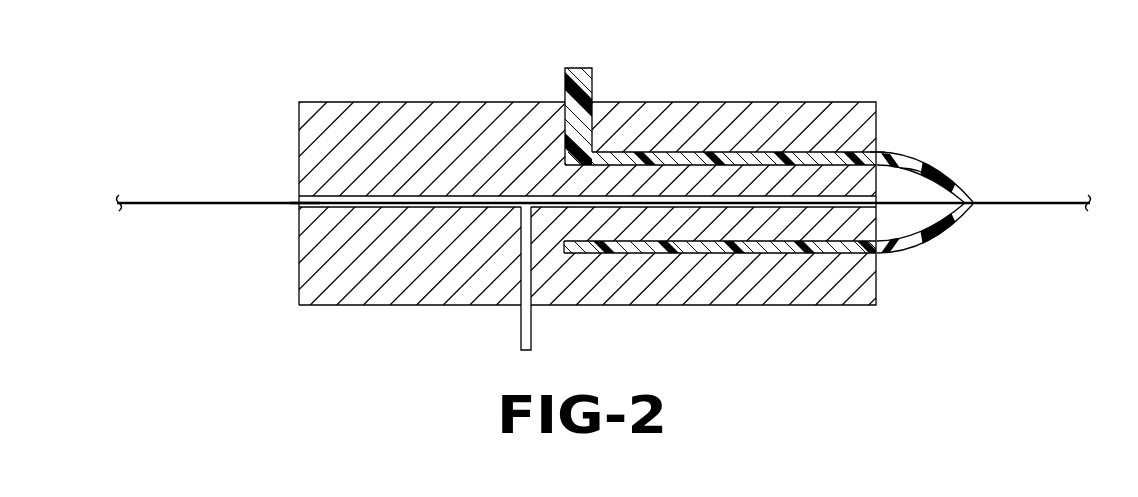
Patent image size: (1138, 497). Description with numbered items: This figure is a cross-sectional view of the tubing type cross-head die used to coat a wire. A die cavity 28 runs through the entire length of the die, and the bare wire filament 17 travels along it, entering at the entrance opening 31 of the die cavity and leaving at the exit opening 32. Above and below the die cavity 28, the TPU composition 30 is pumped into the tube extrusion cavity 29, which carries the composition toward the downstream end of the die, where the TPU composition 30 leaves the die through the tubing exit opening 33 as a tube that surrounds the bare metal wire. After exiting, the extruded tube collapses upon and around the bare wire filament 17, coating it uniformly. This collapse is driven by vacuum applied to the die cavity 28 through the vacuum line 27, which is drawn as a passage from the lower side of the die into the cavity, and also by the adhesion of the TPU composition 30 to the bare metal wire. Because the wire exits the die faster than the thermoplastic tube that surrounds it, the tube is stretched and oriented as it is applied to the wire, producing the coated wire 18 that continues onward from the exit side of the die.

The bare wire filament 17 is at (217, 200).
The wire 18 is at (1042, 203).
The vacuum line 27 is at (521, 322).
The die cavity 28 is at (363, 202).
The tube extrusion cavity 29 is at (733, 152).
The TPU composition 30 is at (593, 118).
The entrance opening 31 is at (297, 204).
The exit opening 32 is at (920, 177).
The tubing exit opening 33 is at (880, 152).